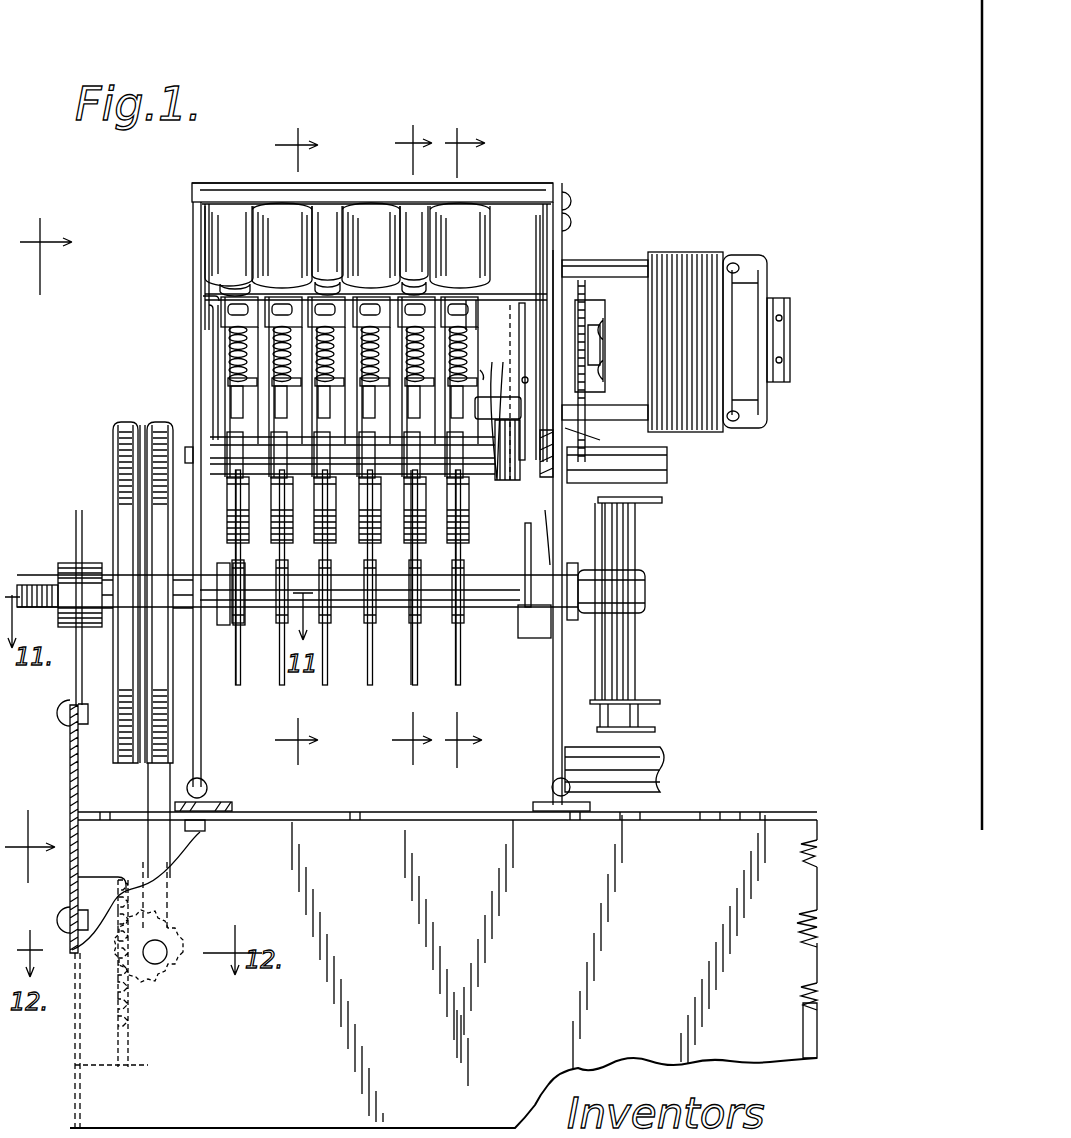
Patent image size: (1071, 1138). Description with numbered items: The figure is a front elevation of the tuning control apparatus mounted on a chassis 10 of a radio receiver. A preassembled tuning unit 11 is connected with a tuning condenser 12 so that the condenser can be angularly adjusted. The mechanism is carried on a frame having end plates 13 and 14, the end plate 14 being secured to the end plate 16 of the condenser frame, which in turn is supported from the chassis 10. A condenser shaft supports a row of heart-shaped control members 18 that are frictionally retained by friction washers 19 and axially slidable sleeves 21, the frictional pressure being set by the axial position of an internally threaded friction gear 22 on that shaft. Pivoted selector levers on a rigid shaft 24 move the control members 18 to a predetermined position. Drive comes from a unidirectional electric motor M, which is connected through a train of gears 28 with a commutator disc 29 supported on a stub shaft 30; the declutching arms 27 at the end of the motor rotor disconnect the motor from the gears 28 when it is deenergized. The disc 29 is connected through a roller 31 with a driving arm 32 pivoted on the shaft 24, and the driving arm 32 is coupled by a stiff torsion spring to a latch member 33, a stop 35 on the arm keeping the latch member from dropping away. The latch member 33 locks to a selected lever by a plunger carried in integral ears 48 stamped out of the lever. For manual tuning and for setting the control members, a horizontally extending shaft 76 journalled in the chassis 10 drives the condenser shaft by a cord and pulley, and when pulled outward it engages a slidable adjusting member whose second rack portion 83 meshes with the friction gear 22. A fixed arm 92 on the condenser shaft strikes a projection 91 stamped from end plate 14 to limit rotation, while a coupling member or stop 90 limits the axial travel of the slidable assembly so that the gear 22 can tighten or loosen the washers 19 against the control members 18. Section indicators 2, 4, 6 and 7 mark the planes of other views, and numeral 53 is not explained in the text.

The chassis 10 is at (702, 817).
The preassembled tuning unit 11 is at (575, 178).
The tuning condenser 12 is at (658, 680).
The end plate 13 is at (192, 283).
The end plate 14 is at (563, 252).
The end plate of the condenser frame 16 is at (552, 777).
The heart-shaped control members 18 is at (370, 683).
The friction washers 19 is at (418, 620).
The axially slidable sleeves 21 is at (349, 606).
The internally threaded friction gear 22 is at (63, 566).
The rigid shaft 24 is at (363, 556).
The declutching arms 27 is at (598, 372).
The train of gears 28 is at (588, 445).
The commutator disc 29 is at (543, 268).
The stub shaft 30 is at (548, 347).
The roller 31 is at (572, 432).
The driving arm 32 is at (521, 327).
The latch member 33 is at (208, 325).
The stop 35 is at (498, 400).
The integral ears 48 is at (477, 302).
The top bar 53 is at (500, 185).
The horizontally extending shaft 76 is at (160, 950).
The second rack portion 83 is at (130, 1068).
The coupling member or stop 90 is at (553, 527).
The projection 91 is at (535, 636).
The fixed arm 92 is at (525, 532).
The electric motor M is at (715, 231).
The section line 2 is at (474, 435).
The section line 4 is at (412, 442).
The section line 6 is at (308, 448).
The section line 7 is at (38, 553).